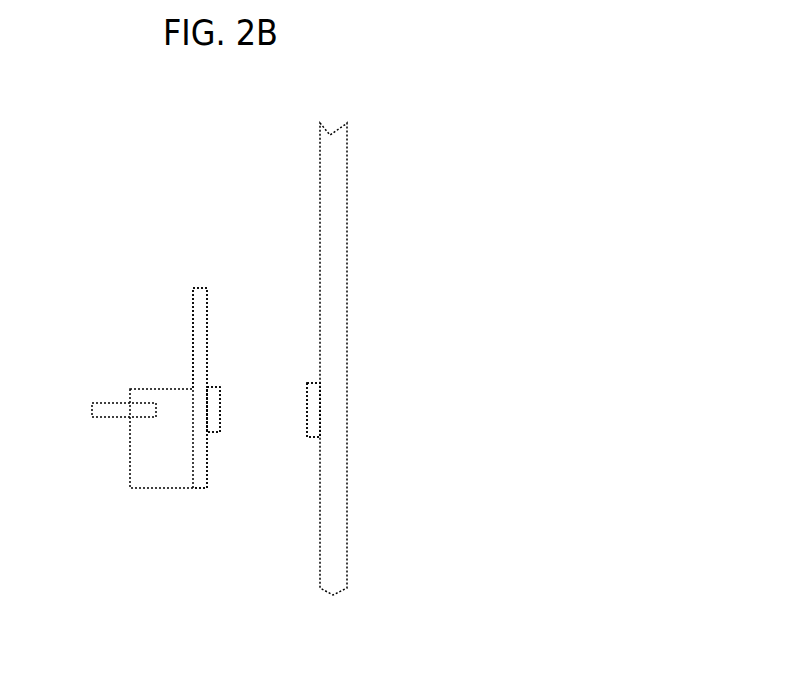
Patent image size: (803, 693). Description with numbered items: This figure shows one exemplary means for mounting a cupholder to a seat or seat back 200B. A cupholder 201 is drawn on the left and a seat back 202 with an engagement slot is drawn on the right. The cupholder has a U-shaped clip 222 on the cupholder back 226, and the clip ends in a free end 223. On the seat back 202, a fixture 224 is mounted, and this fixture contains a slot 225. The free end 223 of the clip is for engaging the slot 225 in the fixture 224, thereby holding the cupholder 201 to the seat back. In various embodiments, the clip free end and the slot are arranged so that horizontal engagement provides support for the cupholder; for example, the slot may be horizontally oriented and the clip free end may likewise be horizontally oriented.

The seat back 200B is at (482, 119).
The cupholder 201 is at (110, 463).
The seat back 202 is at (341, 331).
The U-shaped clip 222 is at (218, 442).
The free end 223 is at (222, 404).
The fixture 224 is at (330, 393).
The slot 225 is at (330, 393).
The cupholder back 226 is at (200, 490).